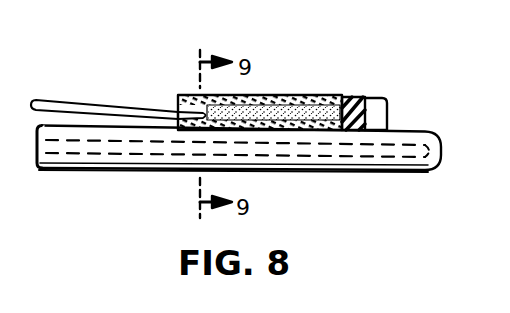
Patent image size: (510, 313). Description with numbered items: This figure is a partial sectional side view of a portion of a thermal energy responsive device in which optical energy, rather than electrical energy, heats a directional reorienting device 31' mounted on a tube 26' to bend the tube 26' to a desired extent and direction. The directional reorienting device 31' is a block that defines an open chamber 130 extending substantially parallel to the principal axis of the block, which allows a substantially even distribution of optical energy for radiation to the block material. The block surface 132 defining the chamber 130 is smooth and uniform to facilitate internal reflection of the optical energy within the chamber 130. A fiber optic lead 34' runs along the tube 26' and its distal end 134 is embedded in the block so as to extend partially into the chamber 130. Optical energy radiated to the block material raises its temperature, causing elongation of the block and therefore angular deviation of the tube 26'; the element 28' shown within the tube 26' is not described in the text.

The tube 26' is at (251, 115).
The wire 28' is at (273, 131).
The directional reorienting device 31' is at (390, 95).
The fiber optic lead 34' is at (118, 81).
The open chamber 130 is at (288, 100).
The block surface 132 is at (331, 103).
The distal end 134 is at (192, 95).